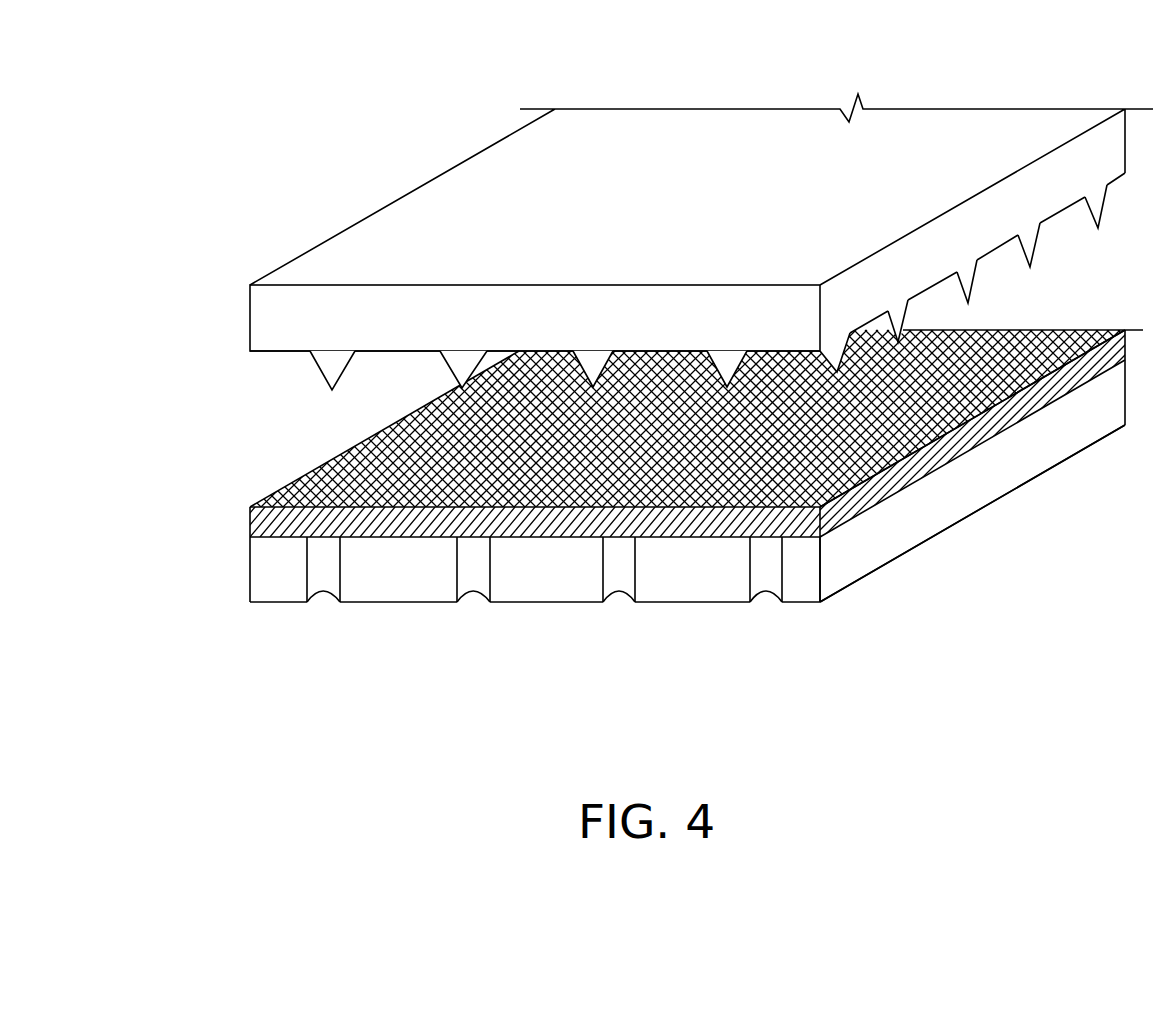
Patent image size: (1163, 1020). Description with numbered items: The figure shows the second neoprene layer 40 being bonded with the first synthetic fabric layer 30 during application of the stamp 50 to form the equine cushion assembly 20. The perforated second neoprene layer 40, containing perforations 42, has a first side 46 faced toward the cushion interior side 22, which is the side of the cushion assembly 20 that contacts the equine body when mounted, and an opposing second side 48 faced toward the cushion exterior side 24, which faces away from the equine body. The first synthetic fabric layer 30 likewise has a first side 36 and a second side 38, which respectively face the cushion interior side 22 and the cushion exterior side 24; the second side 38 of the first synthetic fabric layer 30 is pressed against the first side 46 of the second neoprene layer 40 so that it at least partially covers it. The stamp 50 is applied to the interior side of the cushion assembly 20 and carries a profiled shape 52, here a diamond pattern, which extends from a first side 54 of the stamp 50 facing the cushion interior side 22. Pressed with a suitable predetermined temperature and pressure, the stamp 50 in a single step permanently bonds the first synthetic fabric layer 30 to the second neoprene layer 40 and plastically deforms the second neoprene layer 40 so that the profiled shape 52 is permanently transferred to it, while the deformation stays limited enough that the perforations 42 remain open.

The equine cushion assembly 20 is at (629, 502).
The cushion interior side 22 is at (283, 503).
The cushion exterior side 24 is at (281, 614).
The first synthetic fabric layer 30 is at (553, 524).
The first side of the first synthetic fabric layer 36 is at (818, 493).
The second side of the first synthetic fabric layer 38 is at (807, 528).
The second neoprene layer 40 is at (621, 532).
The perforations 42 is at (328, 570).
The first side of the neoprene layer 46 is at (798, 543).
The second side of the neoprene layer 48 is at (818, 605).
The stamp 50 is at (269, 318).
The profiled shape 52 is at (460, 368).
The first side of the stamp 54 is at (283, 360).